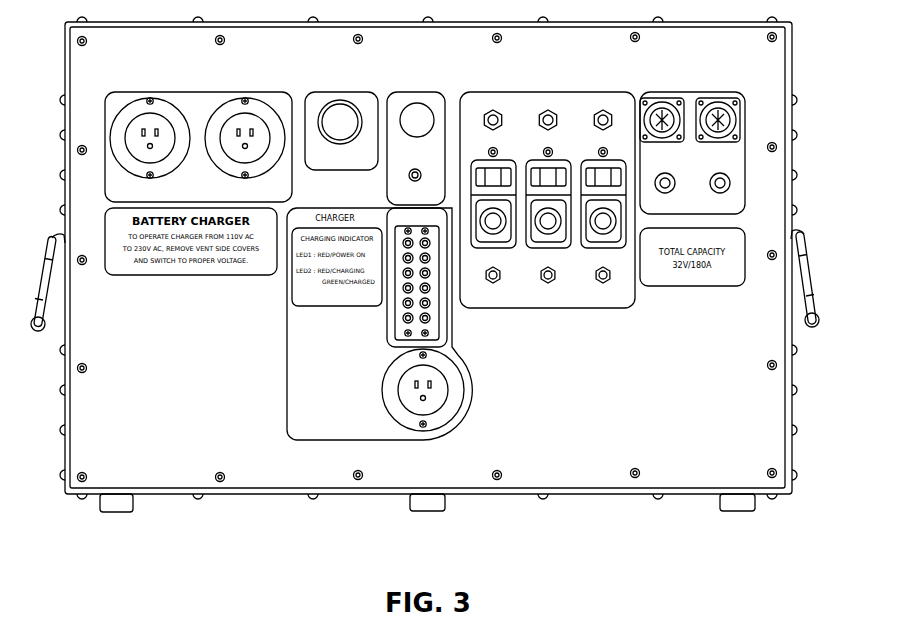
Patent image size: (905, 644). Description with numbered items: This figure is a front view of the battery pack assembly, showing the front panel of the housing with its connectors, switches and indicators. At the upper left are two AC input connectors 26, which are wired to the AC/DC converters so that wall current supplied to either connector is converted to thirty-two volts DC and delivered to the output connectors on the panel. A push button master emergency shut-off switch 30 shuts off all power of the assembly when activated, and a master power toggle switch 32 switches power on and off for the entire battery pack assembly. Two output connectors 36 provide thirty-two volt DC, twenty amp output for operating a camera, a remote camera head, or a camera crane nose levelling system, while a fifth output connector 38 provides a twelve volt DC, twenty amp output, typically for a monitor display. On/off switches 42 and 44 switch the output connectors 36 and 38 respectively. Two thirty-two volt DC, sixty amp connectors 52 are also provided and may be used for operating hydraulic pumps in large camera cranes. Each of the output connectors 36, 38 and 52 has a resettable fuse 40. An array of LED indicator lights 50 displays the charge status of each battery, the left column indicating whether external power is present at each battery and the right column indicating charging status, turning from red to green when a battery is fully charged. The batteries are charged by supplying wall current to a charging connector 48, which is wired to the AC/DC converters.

The AC input connector 26 is at (163, 103).
The master emergency shut-off switch 30 is at (418, 112).
The master power toggle switch 32 is at (398, 176).
The output connector 36 is at (500, 250).
The fifth output connector 38 is at (612, 250).
The resettable fuse 40 is at (498, 283).
The on/off switch 42 is at (496, 111).
The on/off switch 44 is at (605, 111).
The charging connector 48 is at (443, 393).
The array of LED indicator lights 50 is at (394, 318).
The 32 VDC 60 amp connector 52 is at (666, 104).